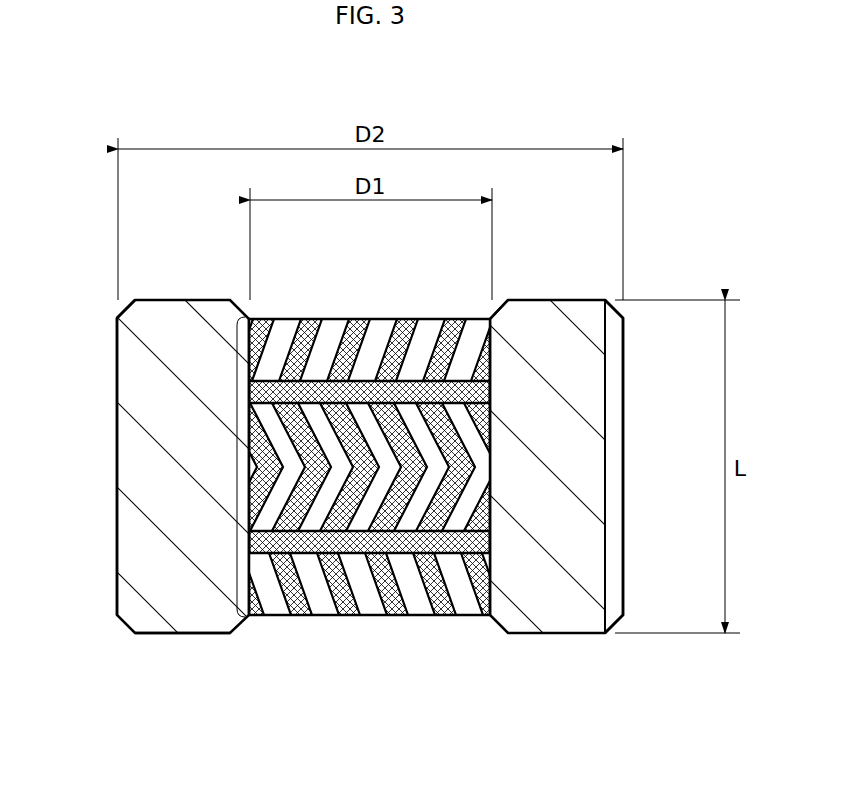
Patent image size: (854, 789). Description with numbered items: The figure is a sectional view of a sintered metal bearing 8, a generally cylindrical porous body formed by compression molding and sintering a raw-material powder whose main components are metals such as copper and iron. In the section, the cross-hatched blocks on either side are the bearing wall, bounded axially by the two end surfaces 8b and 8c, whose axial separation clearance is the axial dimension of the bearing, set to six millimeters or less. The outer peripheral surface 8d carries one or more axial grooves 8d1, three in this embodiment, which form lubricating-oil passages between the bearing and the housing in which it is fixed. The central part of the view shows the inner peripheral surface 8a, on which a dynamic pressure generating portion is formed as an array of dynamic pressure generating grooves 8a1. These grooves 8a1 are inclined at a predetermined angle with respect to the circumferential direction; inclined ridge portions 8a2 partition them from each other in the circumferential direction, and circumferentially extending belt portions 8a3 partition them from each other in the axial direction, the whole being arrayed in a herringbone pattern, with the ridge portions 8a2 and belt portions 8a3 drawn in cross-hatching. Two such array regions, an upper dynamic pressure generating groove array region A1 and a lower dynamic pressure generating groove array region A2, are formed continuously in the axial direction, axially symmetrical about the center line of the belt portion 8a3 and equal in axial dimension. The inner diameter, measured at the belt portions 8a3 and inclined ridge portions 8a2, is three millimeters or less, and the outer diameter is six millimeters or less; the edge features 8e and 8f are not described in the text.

The sintered metal bearing 8 is at (376, 440).
The inner peripheral surface 8a is at (444, 469).
The dynamic pressure generating grooves 8a1 is at (376, 343).
The inclined ridge portions 8a2 is at (346, 341).
The belt portions 8a3 is at (405, 383).
The end surface 8b is at (172, 298).
The end surface 8c is at (177, 635).
The outer peripheral surface 8d is at (117, 459).
The axial grooves 8d1 is at (605, 487).
The chamfer 8e is at (128, 301).
The inner chamfer 8f is at (500, 301).
The upper dynamic pressure generating groove array region A1 is at (226, 390).
The lower dynamic pressure generating groove array region A2 is at (226, 541).